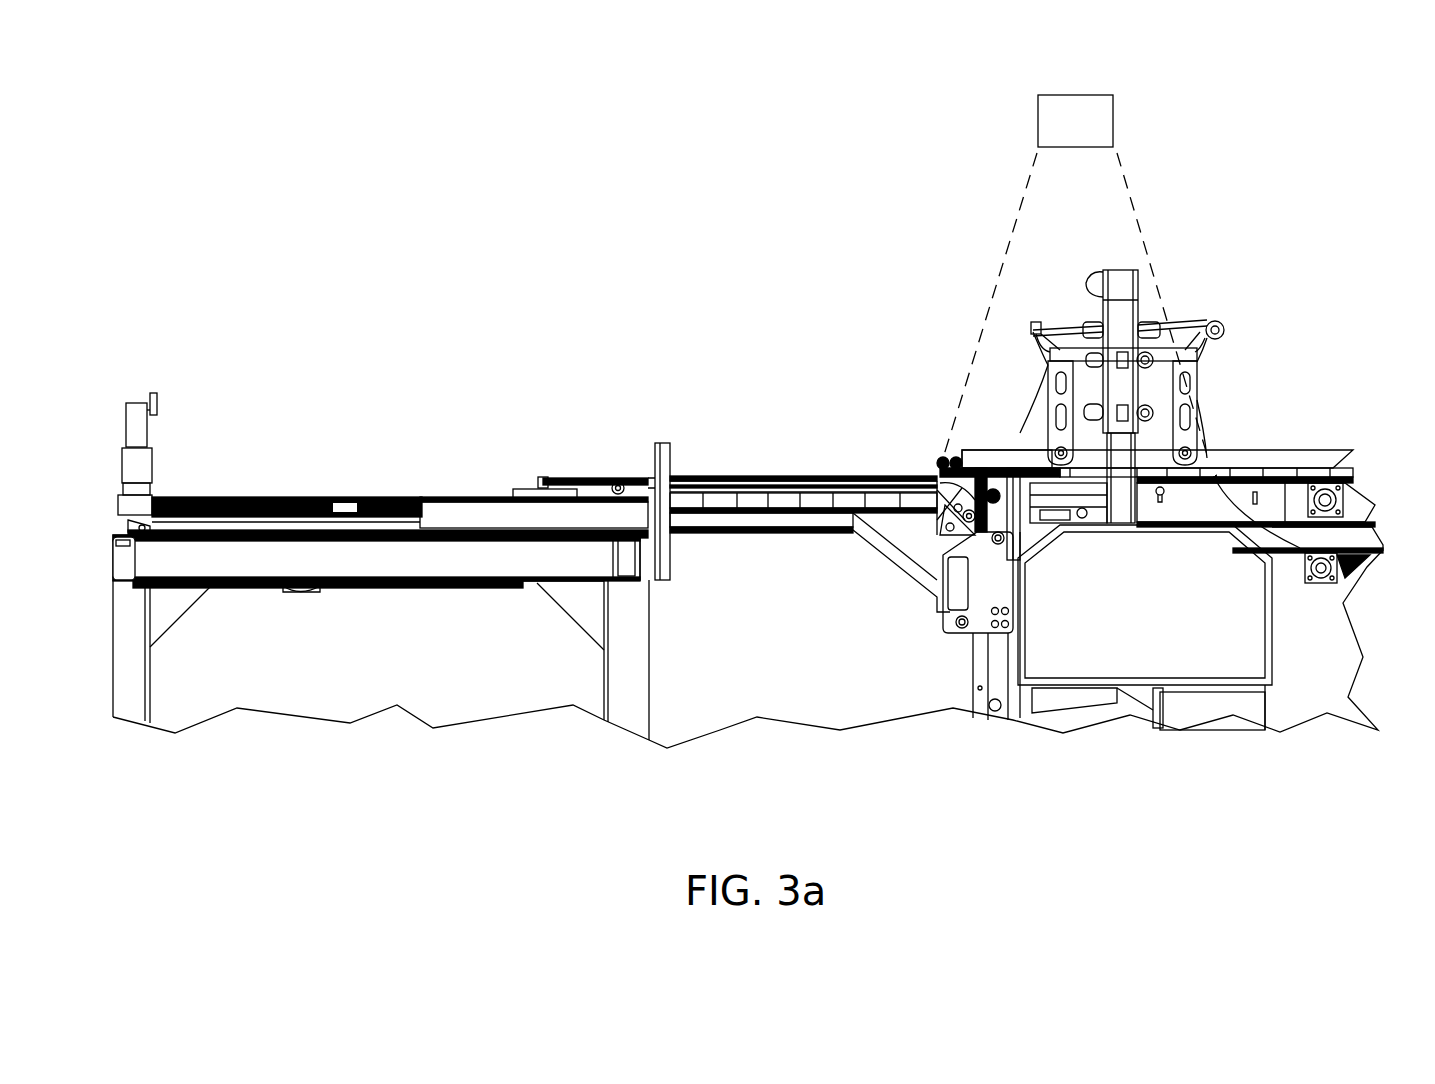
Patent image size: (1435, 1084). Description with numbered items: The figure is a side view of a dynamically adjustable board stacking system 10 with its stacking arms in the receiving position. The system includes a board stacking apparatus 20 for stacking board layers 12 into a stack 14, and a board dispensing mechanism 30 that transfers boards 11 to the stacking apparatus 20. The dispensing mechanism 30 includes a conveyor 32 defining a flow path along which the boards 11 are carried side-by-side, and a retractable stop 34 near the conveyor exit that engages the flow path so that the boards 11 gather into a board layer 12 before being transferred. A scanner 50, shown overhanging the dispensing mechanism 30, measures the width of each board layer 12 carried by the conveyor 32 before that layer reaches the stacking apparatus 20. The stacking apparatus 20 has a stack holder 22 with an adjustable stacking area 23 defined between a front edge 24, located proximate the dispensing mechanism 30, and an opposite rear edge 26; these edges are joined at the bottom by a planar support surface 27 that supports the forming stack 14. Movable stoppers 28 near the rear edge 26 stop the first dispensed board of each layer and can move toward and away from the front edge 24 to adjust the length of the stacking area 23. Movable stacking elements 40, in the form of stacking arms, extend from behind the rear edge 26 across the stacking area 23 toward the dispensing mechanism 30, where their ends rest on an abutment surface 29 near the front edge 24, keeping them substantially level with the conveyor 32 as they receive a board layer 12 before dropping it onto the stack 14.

The board stacking system 10 is at (1334, 184).
The board 11 is at (1286, 470).
The board layer 12 is at (718, 482).
The stack 14 is at (831, 490).
The board stacking apparatus 20 is at (620, 316).
The stack holder 22 is at (736, 549).
The adjustable stacking area 23 is at (880, 413).
The front edge 24 is at (926, 518).
The rear edge 26 is at (678, 474).
The planar support surface 27 is at (778, 519).
The stopper 28 is at (656, 463).
The abutment surface 29 is at (944, 509).
The board dispensing mechanism 30 is at (1246, 367).
The conveyor 32 is at (1366, 570).
The retractable stop 34 is at (942, 457).
The movable stacking elements 40 is at (760, 478).
The scanner 50 is at (1091, 139).